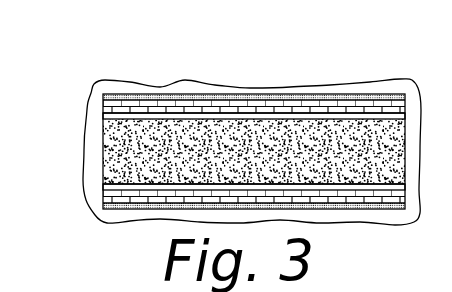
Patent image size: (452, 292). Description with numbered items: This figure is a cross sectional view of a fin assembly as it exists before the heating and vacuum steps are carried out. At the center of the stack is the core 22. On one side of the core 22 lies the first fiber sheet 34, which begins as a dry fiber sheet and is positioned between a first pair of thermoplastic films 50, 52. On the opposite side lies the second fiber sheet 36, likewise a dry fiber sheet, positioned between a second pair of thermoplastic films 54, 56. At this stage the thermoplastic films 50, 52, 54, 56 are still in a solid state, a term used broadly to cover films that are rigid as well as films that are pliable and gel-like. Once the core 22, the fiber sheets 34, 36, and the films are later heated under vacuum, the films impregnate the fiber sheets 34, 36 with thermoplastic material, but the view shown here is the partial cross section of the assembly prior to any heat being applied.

The thermoplastic film 52 is at (118, 95).
The first fiber sheet 34 is at (220, 105).
The thermoplastic film 50 is at (104, 116).
The core 22 is at (110, 157).
The thermoplastic film 56 is at (104, 186).
The second fiber sheet 36 is at (372, 198).
The thermoplastic film 54 is at (114, 210).